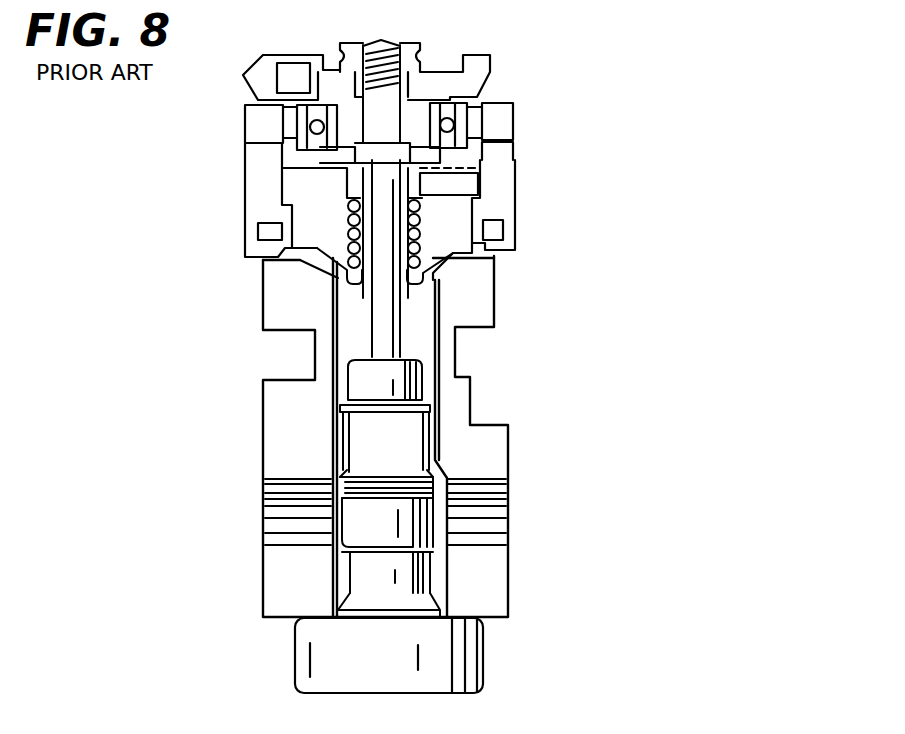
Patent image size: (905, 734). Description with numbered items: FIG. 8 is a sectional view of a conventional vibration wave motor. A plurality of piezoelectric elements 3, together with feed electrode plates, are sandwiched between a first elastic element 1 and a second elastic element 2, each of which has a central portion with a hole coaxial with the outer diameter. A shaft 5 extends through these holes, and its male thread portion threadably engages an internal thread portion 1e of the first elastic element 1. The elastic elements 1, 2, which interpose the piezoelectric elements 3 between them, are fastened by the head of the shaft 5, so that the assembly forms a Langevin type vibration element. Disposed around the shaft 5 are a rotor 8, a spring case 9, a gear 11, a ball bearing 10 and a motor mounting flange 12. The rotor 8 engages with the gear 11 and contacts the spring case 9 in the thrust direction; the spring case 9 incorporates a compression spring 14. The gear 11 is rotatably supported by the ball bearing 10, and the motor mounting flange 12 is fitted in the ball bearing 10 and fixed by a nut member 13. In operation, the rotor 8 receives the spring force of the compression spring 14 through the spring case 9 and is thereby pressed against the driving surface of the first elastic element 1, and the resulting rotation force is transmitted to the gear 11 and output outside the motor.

The first elastic element 1 is at (468, 405).
The internal thread portion 1e is at (340, 418).
The second elastic element 2 is at (500, 578).
The piezoelectric elements 3 is at (515, 476).
The shaft 5 is at (395, 306).
The rotor 8 is at (503, 180).
The spring case 9 is at (303, 216).
The ball bearing 10 is at (300, 122).
The gear 11 is at (507, 118).
The motor mounting flange 12 is at (490, 57).
The nut member 13 is at (412, 45).
The compression spring 14 is at (348, 252).